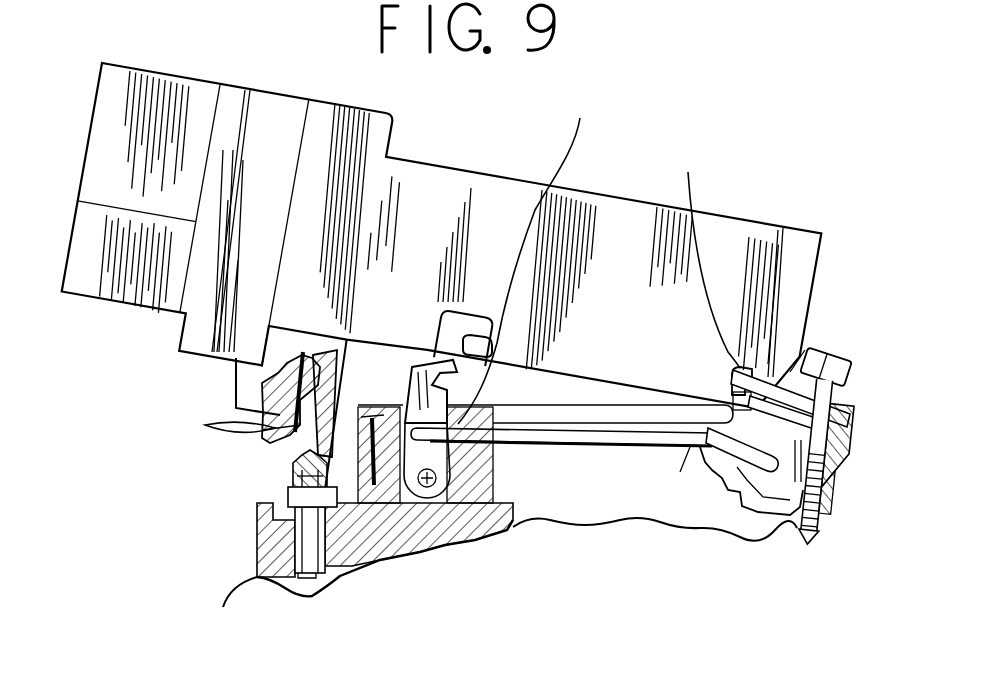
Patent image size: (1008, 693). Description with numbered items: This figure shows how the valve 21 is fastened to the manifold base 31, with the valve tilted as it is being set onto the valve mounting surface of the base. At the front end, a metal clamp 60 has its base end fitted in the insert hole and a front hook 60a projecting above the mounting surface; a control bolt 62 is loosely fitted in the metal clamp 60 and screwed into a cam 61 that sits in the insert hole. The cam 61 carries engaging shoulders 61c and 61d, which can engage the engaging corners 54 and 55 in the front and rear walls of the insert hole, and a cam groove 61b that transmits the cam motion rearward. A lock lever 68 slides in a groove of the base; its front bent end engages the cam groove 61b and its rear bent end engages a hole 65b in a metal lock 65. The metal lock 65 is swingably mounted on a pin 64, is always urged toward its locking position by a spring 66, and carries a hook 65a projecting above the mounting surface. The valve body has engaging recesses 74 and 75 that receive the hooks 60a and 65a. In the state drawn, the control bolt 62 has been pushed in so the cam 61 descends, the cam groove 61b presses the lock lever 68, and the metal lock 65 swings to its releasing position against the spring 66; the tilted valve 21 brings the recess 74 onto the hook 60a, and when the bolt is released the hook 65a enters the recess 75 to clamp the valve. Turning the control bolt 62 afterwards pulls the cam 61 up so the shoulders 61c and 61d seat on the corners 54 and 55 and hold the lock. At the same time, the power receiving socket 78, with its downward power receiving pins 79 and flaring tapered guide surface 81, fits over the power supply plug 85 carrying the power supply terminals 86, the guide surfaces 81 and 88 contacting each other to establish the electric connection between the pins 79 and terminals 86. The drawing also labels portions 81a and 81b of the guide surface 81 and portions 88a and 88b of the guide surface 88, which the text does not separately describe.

The valve 21 is at (606, 176).
The manifold base 31 is at (773, 546).
The engaging corner 54 is at (732, 372).
The engaging corner 55 is at (854, 445).
The metal clamp 60 is at (850, 407).
The front hook 60a is at (793, 350).
The cam 61 is at (823, 500).
The cam groove 61b is at (814, 540).
The engaging shoulder 61c is at (733, 400).
The engaging shoulder 61d is at (842, 467).
The control bolt 62 is at (822, 356).
The pin 64 is at (428, 488).
The metal lock 65 is at (433, 476).
The hook 65a is at (437, 405).
The hole 65b is at (532, 252).
The spring 66 is at (378, 488).
The lock lever 68 is at (684, 446).
The engaging recess 74 is at (705, 252).
The engaging recess 75 is at (443, 408).
The power receiving socket 78 is at (324, 350).
The power receiving pins 79 is at (263, 372).
The tapered guide surface 81 is at (142, 397).
The clamping member lower portion 81a is at (312, 447).
The clamping member flange 81b is at (205, 425).
The power supply plug 85 is at (224, 606).
The power supply terminals 86 is at (300, 596).
The guide surface 88 is at (142, 487).
The screw head 88a is at (290, 470).
The screw nut 88b is at (290, 510).